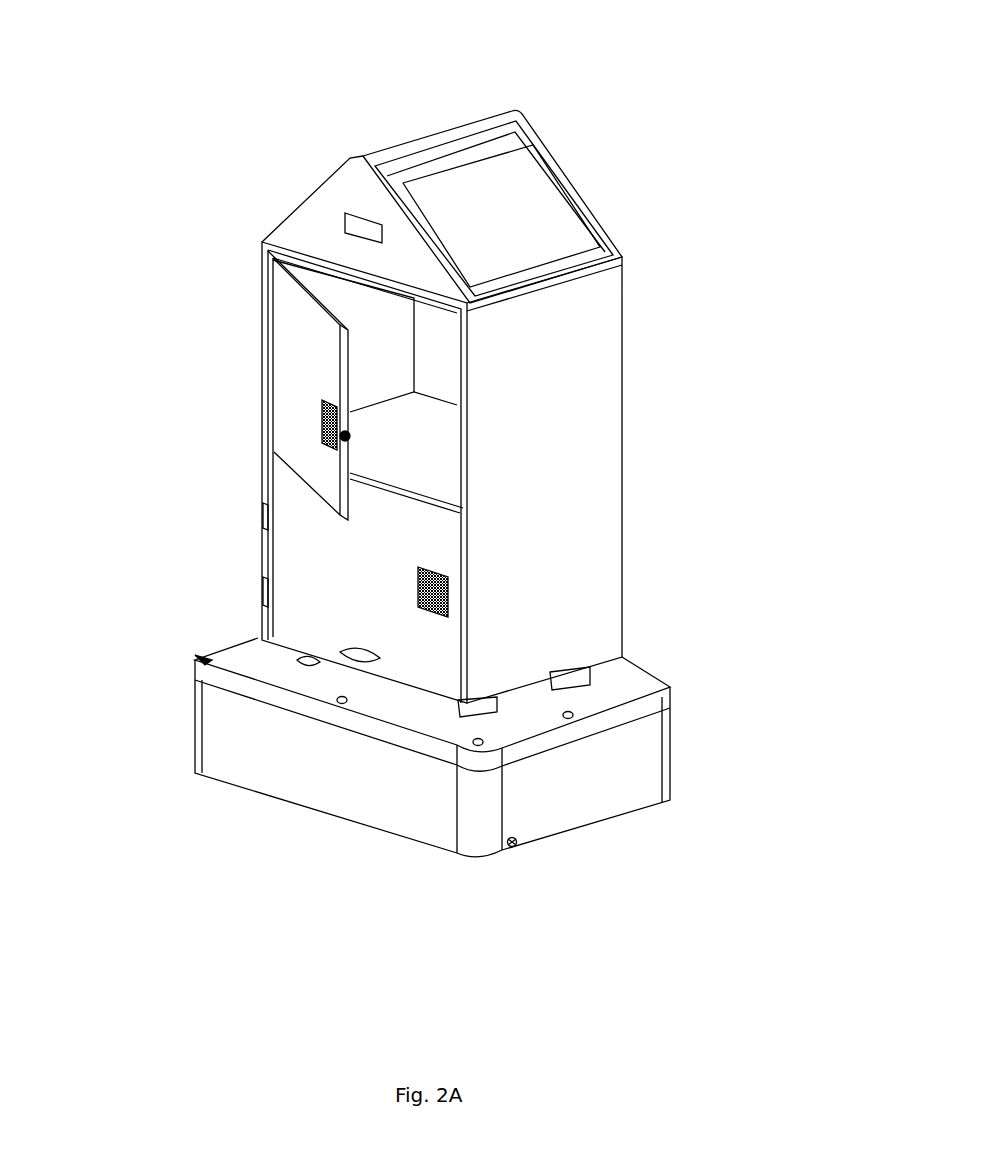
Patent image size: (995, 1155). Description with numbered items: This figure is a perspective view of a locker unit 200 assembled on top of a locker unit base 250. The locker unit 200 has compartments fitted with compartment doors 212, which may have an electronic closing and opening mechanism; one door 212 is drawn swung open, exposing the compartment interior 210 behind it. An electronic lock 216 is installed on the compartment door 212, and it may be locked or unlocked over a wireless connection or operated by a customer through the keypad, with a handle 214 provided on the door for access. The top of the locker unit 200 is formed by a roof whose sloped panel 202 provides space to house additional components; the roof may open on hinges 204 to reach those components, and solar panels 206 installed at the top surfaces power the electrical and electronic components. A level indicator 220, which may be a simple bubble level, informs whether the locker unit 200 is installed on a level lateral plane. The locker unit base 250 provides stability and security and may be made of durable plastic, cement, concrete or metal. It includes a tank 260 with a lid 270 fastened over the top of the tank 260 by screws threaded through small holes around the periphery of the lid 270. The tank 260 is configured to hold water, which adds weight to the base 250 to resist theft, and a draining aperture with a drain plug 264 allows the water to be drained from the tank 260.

The locker unit 200 is at (607, 110).
The housing top panel 202 is at (342, 190).
The hinges 204 is at (497, 128).
The solar panels 206 is at (563, 217).
The storage compartment 210 is at (377, 367).
The compartment door 212 is at (292, 335).
The door handle 214 is at (323, 428).
The electronic lock 216 is at (347, 438).
The level indicator 220 is at (340, 650).
The locker unit base 250 is at (153, 717).
The tank 260 is at (647, 765).
The drain plug 264 is at (515, 843).
The lid 270 is at (622, 683).